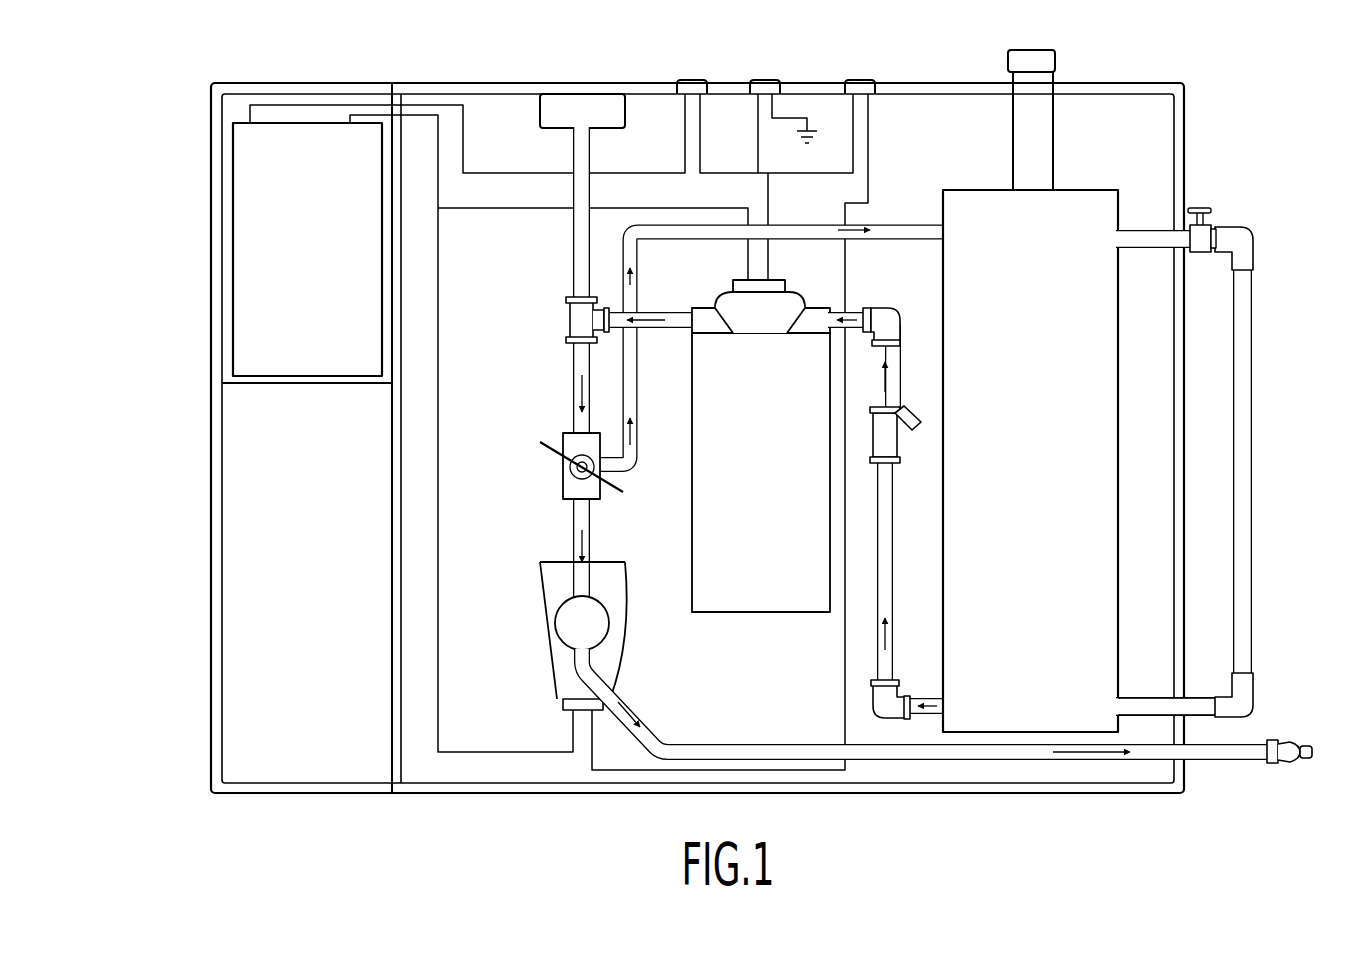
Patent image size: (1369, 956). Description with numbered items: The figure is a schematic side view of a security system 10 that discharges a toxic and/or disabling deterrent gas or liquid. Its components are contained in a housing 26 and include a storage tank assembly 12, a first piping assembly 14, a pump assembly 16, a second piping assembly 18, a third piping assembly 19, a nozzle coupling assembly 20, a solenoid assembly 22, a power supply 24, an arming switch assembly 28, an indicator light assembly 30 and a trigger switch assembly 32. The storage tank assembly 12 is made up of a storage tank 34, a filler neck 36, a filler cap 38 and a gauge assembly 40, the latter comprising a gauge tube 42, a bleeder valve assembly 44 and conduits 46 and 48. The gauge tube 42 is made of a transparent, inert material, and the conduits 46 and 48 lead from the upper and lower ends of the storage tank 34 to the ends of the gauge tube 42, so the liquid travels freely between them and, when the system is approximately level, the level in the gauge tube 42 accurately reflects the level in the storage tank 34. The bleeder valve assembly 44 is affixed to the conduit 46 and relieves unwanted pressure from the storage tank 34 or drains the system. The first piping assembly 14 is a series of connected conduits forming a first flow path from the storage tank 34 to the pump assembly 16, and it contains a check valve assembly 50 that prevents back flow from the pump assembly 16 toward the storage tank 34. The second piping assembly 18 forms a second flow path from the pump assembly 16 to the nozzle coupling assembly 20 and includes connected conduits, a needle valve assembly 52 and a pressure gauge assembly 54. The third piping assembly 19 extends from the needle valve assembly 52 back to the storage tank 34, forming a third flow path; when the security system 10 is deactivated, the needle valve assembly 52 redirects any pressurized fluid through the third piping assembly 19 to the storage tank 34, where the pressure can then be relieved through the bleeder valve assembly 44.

The security system 10 is at (203, 505).
The storage tank assembly 12 is at (955, 188).
The first piping assembly 14 is at (890, 307).
The pump assembly 16 is at (751, 619).
The second piping assembly 18 is at (566, 319).
The third piping assembly 19 is at (673, 239).
The nozzle coupling assembly 20 is at (1290, 766).
The solenoid assembly 22 is at (540, 595).
The power supply 24 is at (246, 323).
The housing 26 is at (240, 794).
The arming switch assembly 28 is at (694, 79).
The indicator light assembly 30 is at (773, 79).
The trigger switch assembly 32 is at (866, 79).
The storage tank 34 is at (1008, 498).
The filler neck 36 is at (1033, 143).
The filler cap 38 is at (1046, 60).
The gauge assembly 40 is at (1258, 226).
The gauge tube 42 is at (1255, 388).
The bleeder valve assembly 44 is at (1206, 231).
The conduit 46 is at (1153, 238).
The conduit 48 is at (1162, 700).
The check valve assembly 50 is at (899, 447).
The needle valve assembly 52 is at (562, 476).
The pressure gauge assembly 54 is at (587, 105).